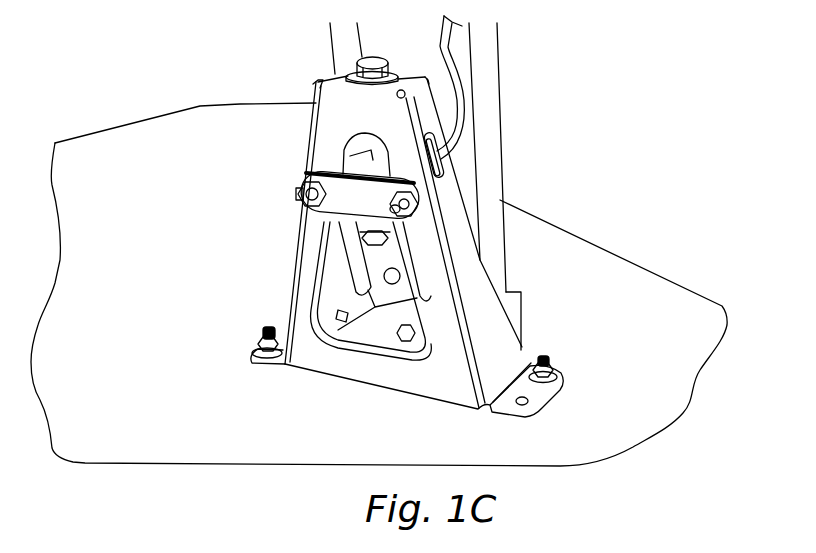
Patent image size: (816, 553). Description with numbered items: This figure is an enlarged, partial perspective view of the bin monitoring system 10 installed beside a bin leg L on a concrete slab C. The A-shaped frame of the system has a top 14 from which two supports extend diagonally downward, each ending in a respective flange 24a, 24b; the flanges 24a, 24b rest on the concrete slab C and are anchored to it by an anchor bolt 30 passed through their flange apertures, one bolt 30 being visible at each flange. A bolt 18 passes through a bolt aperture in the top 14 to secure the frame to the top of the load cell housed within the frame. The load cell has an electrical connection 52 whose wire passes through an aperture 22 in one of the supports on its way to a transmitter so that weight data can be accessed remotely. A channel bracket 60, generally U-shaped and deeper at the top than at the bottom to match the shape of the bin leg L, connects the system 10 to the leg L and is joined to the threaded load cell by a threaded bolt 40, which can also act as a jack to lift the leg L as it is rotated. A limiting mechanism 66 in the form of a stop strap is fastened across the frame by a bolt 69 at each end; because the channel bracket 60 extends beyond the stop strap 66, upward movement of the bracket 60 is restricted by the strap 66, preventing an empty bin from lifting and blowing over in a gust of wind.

The bin monitoring system 10 is at (294, 116).
The top 14 is at (336, 76).
The bolt 18 is at (374, 57).
The leg L is at (498, 65).
The electrical connection 52 is at (455, 95).
The aperture 22 is at (440, 171).
The limiting mechanism 66 is at (346, 163).
The bolt 69 is at (420, 200).
The channel bracket 60 is at (332, 260).
The threaded bolt 40 is at (372, 252).
The concrete slab C is at (610, 294).
The anchor bolt 30 is at (256, 344).
The flange 24a is at (260, 365).
The flange 24b is at (511, 405).